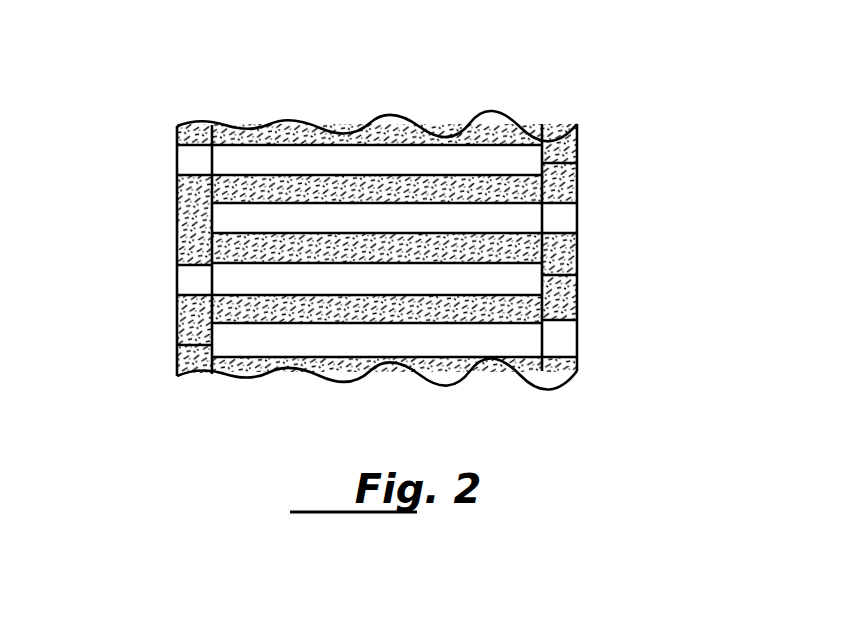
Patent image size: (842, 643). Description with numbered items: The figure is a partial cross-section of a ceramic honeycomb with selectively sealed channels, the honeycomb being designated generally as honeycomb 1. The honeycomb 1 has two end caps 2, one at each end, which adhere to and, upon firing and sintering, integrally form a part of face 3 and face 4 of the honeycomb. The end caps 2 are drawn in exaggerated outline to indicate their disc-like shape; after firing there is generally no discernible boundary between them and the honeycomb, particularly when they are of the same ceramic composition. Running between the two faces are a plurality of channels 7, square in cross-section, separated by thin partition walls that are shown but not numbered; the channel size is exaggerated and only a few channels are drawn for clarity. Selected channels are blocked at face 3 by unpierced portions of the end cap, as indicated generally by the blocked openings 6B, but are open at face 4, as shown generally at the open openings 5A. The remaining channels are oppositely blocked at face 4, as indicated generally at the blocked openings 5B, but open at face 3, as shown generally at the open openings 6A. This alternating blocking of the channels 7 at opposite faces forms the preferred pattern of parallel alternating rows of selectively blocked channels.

The honeycomb 1 is at (412, 124).
The end caps 2 is at (183, 124).
The face 3 is at (556, 188).
The face 4 is at (178, 190).
The open openings at face 4 5A is at (195, 160).
The blocked openings at face 4 5B is at (192, 228).
The open openings at face 3 6A is at (555, 220).
The blocked openings at face 3 6B is at (545, 170).
The channels 7 is at (473, 220).